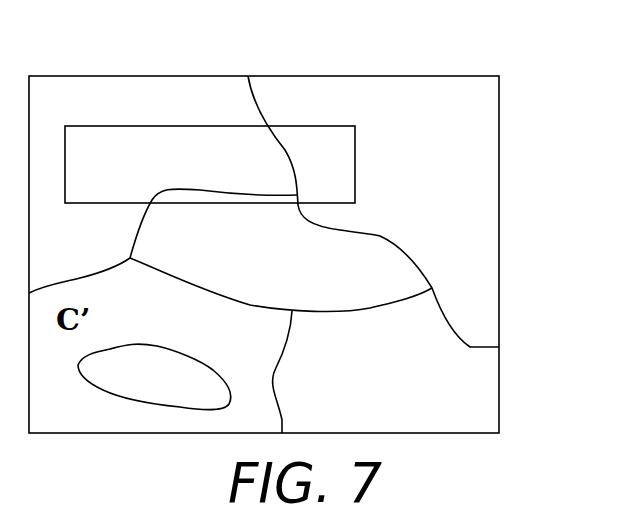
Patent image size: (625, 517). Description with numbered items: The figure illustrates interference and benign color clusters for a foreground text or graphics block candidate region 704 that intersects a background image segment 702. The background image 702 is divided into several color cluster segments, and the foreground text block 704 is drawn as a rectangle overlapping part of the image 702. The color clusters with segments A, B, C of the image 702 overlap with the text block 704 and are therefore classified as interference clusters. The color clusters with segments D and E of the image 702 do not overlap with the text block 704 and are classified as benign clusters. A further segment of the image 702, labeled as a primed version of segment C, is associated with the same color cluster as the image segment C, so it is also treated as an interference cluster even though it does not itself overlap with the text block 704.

The background image segment 702 is at (501, 200).
The foreground text or graphics block candidate region 704 is at (130, 126).
The image segment A is at (163, 241).
The image segment B is at (281, 280).
The image segment C is at (373, 211).
The image segment D is at (154, 377).
The image segment E is at (340, 372).